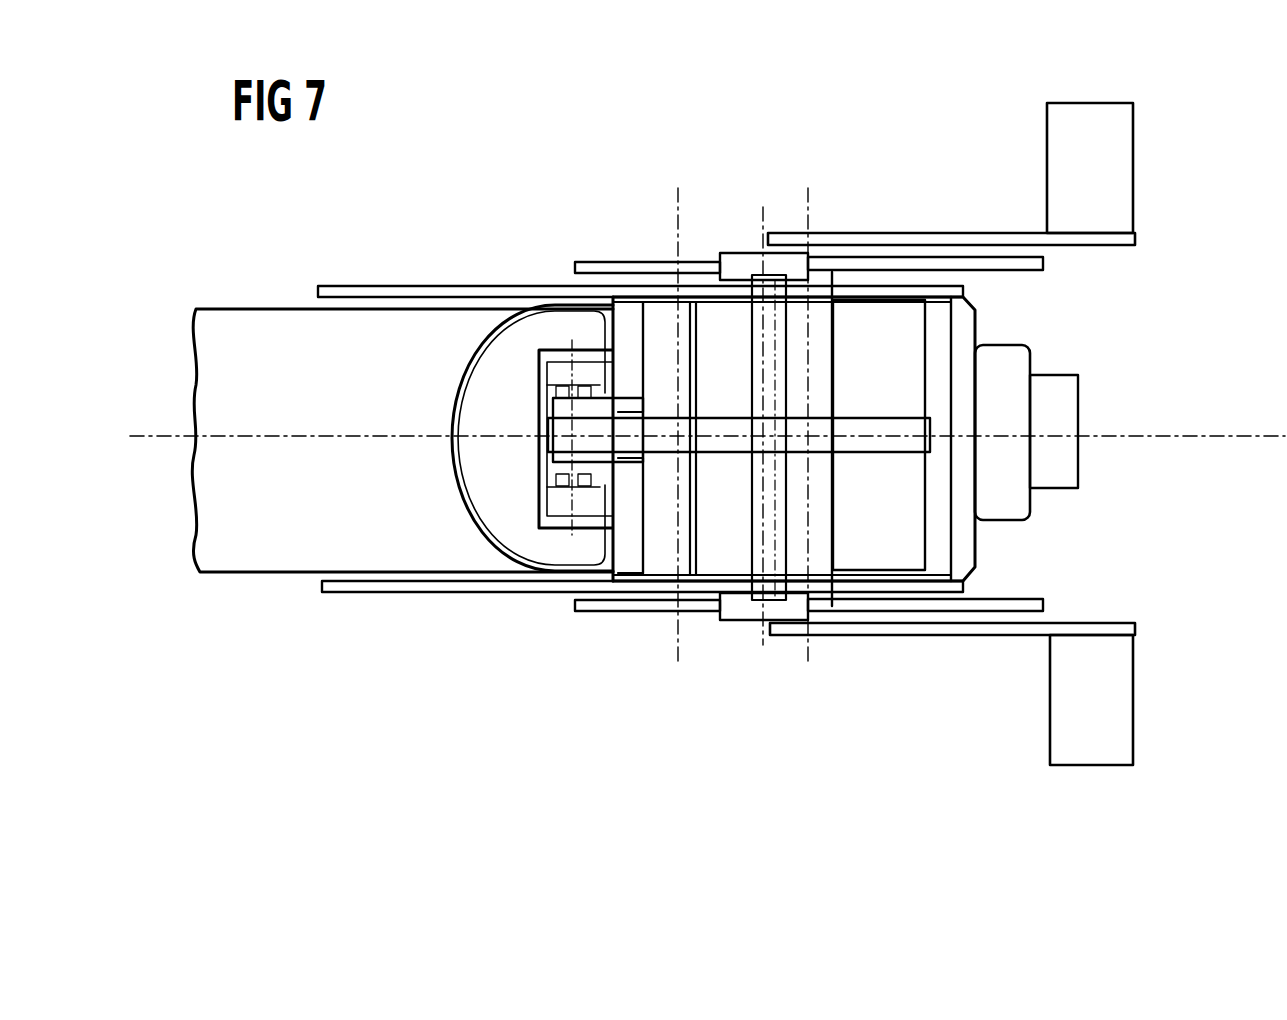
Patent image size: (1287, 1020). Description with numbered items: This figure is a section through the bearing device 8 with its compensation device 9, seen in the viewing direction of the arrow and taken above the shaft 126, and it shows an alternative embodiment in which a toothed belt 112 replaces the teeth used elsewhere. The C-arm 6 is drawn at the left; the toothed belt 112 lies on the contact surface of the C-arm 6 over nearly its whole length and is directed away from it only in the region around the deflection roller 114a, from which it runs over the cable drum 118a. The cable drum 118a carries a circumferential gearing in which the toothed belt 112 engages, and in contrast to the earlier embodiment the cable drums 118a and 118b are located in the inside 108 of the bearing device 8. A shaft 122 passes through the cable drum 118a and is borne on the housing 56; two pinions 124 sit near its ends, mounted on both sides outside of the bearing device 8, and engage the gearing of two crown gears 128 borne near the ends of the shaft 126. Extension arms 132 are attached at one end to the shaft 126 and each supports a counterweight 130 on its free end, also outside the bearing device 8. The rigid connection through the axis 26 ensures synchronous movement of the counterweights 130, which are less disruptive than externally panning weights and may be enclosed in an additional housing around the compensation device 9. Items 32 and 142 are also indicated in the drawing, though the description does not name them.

The C-arm 6 is at (240, 290).
The bearing device 8 is at (805, 665).
The compensation device 9 is at (1007, 682).
The axis 26 is at (1215, 430).
The clamping bracket 32 is at (556, 370).
The housing 56 is at (450, 290).
The inside of the bearing device 108 is at (938, 550).
The toothed belt 112 is at (895, 440).
The deflection roller 114a is at (572, 452).
The cable drum 118a is at (718, 338).
The cable drum 118b is at (603, 567).
The shaft 122 is at (755, 520).
The pinion 124 is at (733, 253).
The shaft 126 is at (820, 348).
The crown gear 128 is at (853, 262).
The counterweight 130 is at (1113, 168).
The extension arm 132 is at (980, 238).
The spacer block 142 is at (670, 627).